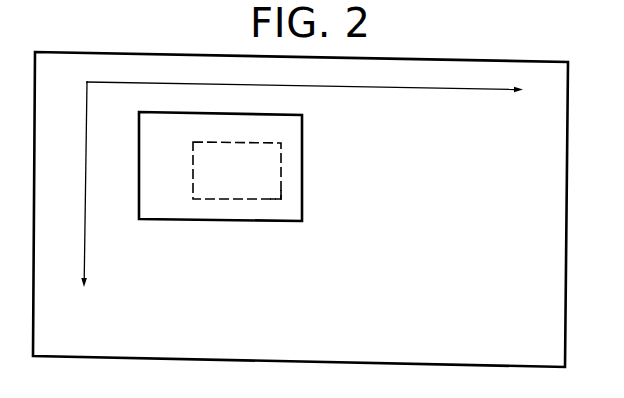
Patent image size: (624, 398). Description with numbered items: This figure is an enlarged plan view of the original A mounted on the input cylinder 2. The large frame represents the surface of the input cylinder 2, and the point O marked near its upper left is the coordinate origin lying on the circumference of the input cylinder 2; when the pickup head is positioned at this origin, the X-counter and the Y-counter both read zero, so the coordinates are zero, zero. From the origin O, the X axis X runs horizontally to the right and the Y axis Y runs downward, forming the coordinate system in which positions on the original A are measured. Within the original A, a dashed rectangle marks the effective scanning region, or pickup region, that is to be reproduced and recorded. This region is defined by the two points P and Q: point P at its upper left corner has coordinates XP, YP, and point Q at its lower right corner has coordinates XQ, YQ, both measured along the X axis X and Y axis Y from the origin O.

The input cylinder 2 is at (539, 62).
The original A is at (304, 168).
The point P is at (193, 142).
The point Q is at (280, 200).
The coordinate origin O is at (78, 76).
The X coordinate axis X is at (314, 92).
The Y coordinate axis Y is at (83, 200).